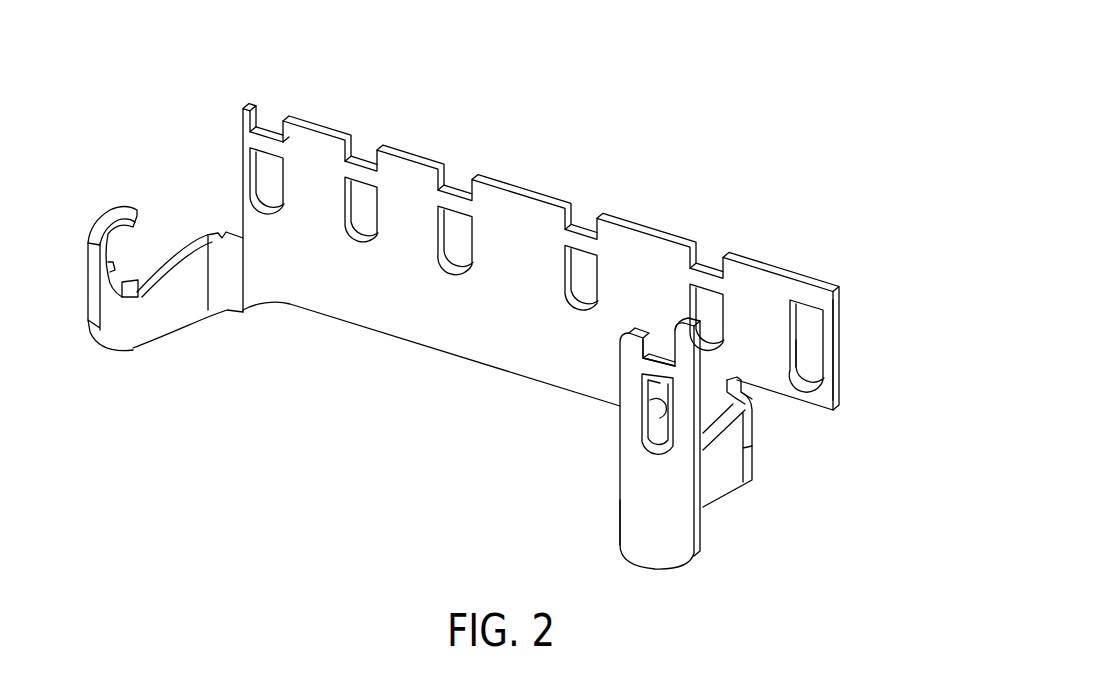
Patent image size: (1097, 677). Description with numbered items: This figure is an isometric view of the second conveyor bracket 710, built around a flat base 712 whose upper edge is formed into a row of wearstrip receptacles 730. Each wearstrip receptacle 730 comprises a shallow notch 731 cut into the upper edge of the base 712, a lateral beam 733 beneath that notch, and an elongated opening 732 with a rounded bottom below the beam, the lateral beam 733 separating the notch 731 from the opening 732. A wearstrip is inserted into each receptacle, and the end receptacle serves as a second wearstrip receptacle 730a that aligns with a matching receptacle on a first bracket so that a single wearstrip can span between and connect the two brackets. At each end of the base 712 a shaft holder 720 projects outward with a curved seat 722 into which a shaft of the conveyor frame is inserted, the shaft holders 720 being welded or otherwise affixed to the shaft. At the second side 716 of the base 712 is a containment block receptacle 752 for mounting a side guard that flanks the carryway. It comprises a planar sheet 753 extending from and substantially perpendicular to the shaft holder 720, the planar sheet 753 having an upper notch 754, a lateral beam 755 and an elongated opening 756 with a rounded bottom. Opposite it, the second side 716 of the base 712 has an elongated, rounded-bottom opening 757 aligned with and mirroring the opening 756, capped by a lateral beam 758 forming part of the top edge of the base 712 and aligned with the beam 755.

The second conveyor bracket 710 is at (658, 175).
The base 712 is at (437, 340).
The second side 716 is at (850, 385).
The shaft holder 720 is at (157, 328).
The curved seat 722 is at (140, 263).
The wearstrip receptacle 730 is at (263, 114).
The second wearstrip receptacle 730a is at (713, 260).
The shallow notch 731 is at (279, 113).
The elongated opening 732 is at (272, 178).
The lateral beam 733 is at (255, 140).
The containment block receptacle 752 is at (598, 463).
The planar sheet 753 is at (640, 552).
The notch 754 is at (660, 345).
The lateral beam 755 is at (666, 376).
The elongated opening 756 is at (653, 441).
The elongated opening 757 is at (808, 343).
The lateral beam 758 is at (808, 303).